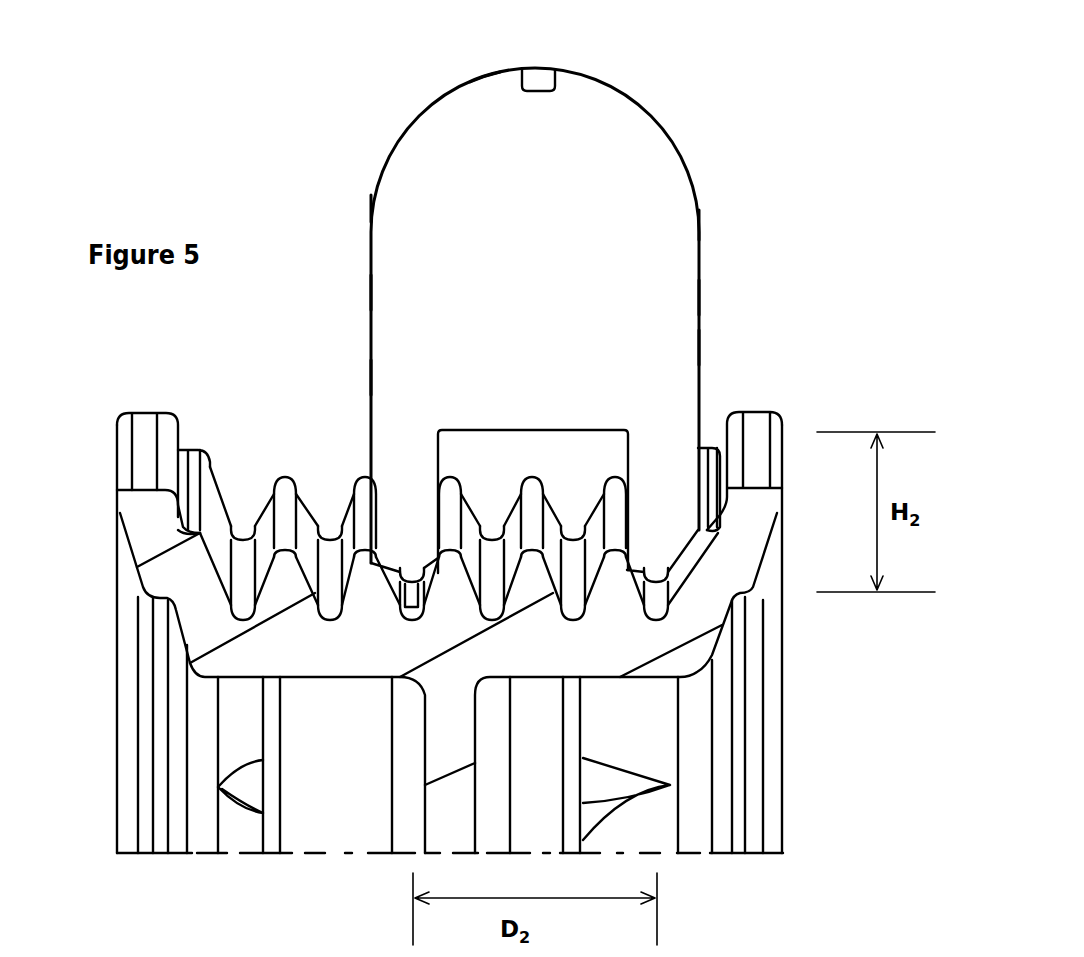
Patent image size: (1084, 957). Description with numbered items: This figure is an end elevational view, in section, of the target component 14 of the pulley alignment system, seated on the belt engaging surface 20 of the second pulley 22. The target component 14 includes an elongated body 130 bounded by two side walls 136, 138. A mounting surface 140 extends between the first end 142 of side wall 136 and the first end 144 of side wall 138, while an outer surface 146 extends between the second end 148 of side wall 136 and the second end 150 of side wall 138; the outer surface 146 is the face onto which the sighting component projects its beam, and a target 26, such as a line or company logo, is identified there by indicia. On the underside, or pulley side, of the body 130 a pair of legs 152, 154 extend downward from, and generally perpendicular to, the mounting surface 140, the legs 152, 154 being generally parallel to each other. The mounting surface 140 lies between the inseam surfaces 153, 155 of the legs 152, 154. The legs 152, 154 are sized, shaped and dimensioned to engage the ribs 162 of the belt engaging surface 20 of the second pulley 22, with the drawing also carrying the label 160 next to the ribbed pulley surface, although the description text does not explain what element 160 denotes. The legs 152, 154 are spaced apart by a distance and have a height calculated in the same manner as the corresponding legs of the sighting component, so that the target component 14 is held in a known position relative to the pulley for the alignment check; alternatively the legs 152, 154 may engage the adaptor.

The target component 14 is at (697, 68).
The belt engaging surface 20 is at (185, 570).
The second pulley 22 is at (784, 712).
The target 26 is at (541, 70).
The elongated body 130 is at (412, 160).
The side wall 136 is at (700, 298).
The side wall 138 is at (365, 292).
The mounting surface 140 is at (553, 438).
The first end of side wall 142 is at (705, 348).
The first end of side wall 144 is at (365, 375).
The outer surface 146 is at (478, 82).
The second end of side wall 148 is at (700, 225).
The second end of side wall 150 is at (370, 208).
The leg 152 is at (667, 483).
The inseam surface 153 is at (615, 447).
The leg 154 is at (375, 485).
The inseam surface 155 is at (445, 457).
The left trough 160 is at (413, 613).
The ribs 162 is at (553, 577).